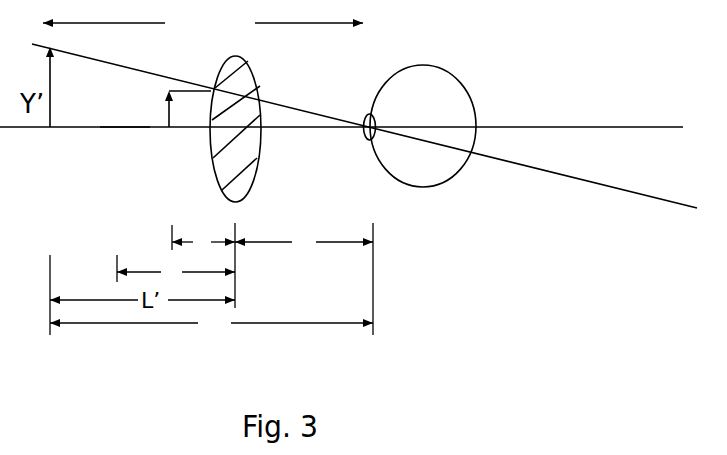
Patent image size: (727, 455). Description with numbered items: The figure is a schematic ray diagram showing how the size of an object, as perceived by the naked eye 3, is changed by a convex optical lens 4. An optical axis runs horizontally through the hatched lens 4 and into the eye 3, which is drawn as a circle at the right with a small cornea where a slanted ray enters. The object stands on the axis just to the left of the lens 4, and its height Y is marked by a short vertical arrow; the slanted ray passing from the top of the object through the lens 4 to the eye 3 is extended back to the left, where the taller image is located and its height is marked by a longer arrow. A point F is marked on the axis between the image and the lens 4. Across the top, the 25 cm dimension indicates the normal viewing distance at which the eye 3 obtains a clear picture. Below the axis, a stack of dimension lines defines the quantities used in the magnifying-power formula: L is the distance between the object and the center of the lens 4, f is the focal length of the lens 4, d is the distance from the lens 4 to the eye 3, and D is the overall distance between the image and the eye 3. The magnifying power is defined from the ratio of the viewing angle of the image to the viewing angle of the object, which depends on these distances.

The naked eye 3 is at (450, 177).
The convex optical lens 4 is at (252, 75).
The normal viewing distance 25 is at (203, 25).
The focal point F is at (125, 142).
The height of the object Y is at (177, 109).
The distance between the object and the center of the lens L is at (203, 242).
The distance from the lens to the eye d is at (304, 242).
The focal length of the lens f is at (176, 272).
The distance between the image and the eye D is at (211, 324).